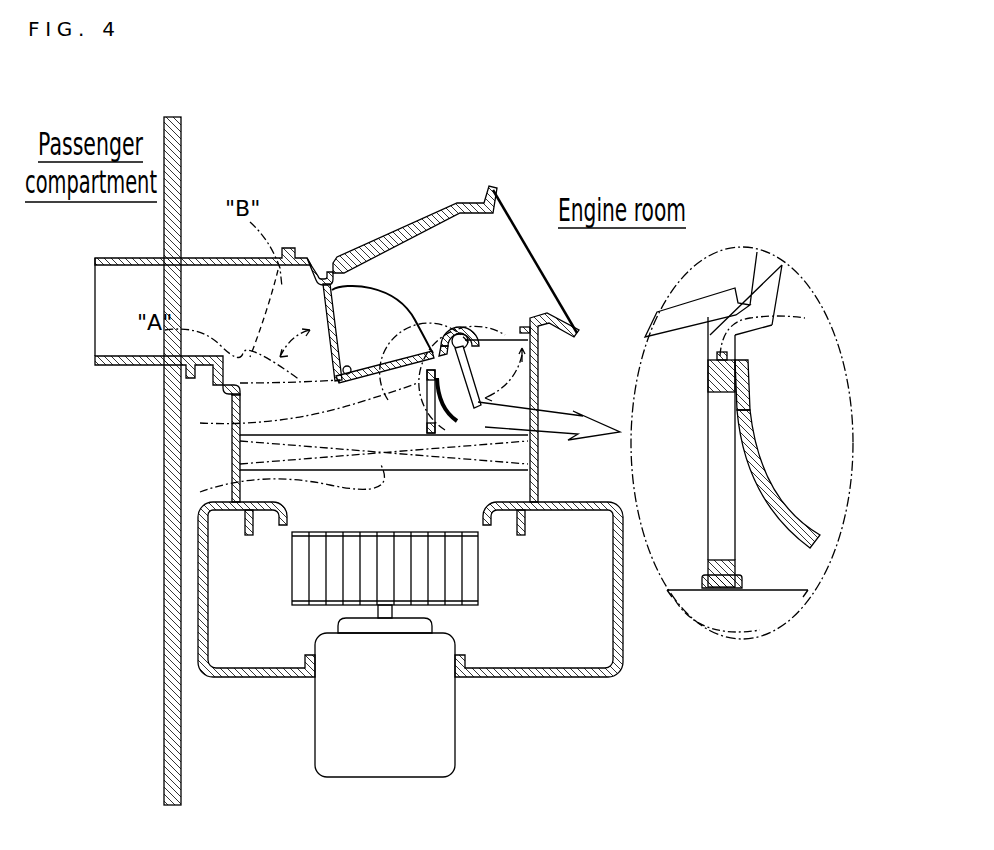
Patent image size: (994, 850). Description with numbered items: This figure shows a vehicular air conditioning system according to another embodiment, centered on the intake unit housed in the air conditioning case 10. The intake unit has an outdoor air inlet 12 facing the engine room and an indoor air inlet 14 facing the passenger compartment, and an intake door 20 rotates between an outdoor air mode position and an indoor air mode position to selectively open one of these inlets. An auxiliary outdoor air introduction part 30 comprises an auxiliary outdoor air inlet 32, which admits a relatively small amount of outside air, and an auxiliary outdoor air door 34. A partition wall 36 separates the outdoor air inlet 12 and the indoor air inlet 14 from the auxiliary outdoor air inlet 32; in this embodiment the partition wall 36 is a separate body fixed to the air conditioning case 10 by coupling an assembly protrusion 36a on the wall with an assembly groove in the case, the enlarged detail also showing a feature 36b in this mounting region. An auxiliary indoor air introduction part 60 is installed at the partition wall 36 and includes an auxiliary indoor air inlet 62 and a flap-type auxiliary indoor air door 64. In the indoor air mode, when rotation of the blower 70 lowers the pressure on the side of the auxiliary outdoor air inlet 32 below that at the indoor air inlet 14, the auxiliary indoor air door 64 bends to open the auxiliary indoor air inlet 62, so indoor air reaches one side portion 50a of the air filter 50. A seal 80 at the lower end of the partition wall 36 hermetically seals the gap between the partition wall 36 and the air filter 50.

The air conditioning case 10 is at (424, 198).
The outdoor air inlet 12 is at (402, 276).
The indoor air inlet 14 is at (245, 316).
The intake door 20 is at (347, 268).
The auxiliary outdoor air introduction part 30 is at (515, 238).
The auxiliary outdoor air inlet 32 is at (501, 319).
The auxiliary outdoor air door 34 is at (492, 336).
The partition wall 36 is at (239, 421).
The assembly protrusion 36a is at (735, 378).
The protrusion 36b is at (725, 352).
The air filter 50 is at (236, 478).
The one side portion of the air filter 50a is at (530, 463).
The auxiliary indoor air introduction part 60 is at (688, 454).
The auxiliary indoor air inlet 62 is at (721, 485).
The auxiliary indoor air door 64 is at (750, 405).
The blower 70 is at (480, 567).
The seal 80 is at (720, 588).